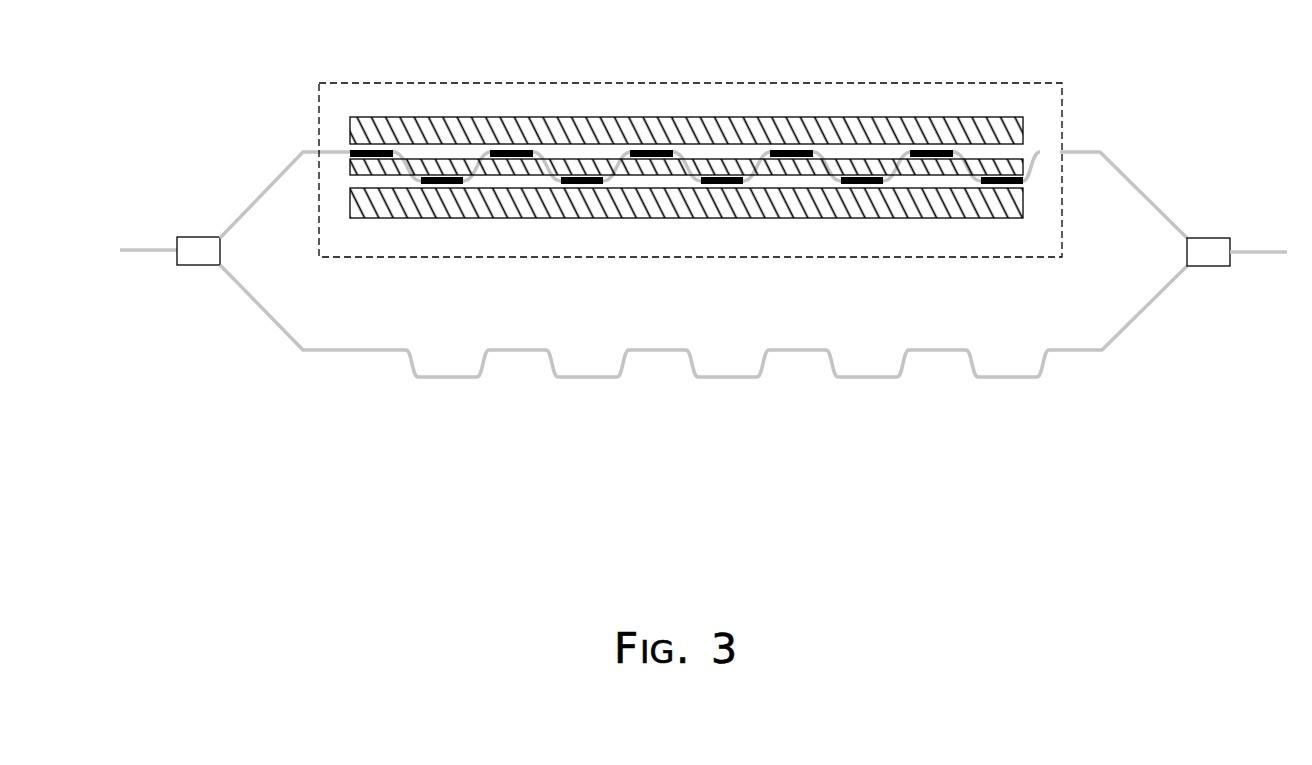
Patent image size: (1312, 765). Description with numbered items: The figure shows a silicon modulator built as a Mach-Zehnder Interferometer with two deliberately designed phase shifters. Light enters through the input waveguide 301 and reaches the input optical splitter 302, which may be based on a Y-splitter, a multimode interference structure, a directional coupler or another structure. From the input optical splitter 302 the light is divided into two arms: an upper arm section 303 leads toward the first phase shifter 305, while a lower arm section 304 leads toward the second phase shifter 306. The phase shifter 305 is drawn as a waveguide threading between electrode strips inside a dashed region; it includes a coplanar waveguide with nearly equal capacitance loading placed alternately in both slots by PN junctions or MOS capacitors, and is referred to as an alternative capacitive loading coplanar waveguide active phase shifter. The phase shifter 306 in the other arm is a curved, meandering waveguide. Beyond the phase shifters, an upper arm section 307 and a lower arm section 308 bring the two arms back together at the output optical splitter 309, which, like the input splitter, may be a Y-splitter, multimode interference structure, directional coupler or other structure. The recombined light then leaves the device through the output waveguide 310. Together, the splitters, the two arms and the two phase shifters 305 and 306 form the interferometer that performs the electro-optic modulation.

The input waveguide 301 is at (160, 250).
The input optical splitter 302 is at (196, 237).
The first arm waveguide 303 is at (249, 197).
The second arm waveguide 304 is at (247, 304).
The phase shifter 305 is at (397, 97).
The phase shifter 306 is at (446, 382).
The first output arm waveguide 307 is at (1152, 192).
The second output arm waveguide 308 is at (1148, 315).
The output optical splitter 309 is at (1208, 237).
The output waveguide 310 is at (1258, 250).